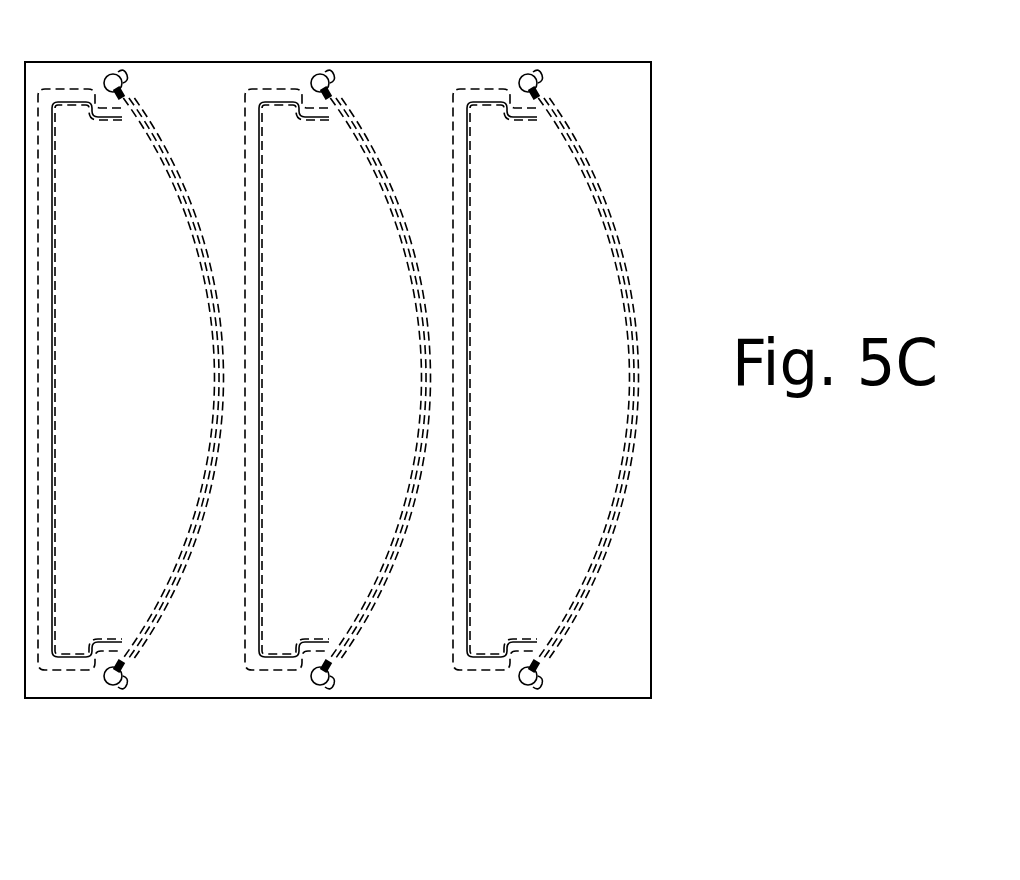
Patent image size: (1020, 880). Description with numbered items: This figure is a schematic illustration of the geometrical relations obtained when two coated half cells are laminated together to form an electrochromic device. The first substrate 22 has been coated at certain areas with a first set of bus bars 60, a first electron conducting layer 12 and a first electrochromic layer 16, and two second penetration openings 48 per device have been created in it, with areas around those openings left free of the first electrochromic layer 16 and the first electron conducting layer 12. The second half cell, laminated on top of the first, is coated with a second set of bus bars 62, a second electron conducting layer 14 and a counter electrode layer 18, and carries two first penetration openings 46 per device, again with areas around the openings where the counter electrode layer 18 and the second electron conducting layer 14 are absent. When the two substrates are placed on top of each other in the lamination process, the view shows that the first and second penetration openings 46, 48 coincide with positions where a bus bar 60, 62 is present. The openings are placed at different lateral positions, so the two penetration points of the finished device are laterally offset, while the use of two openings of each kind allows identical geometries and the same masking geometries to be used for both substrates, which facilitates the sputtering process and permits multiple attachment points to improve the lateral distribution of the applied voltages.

The first electron conducting layer 12 is at (396, 386).
The second electron conducting layer 14 is at (396, 386).
The first electrochromic layer 16 is at (396, 386).
The counter electrode layer 18 is at (396, 386).
The first substrate 22 is at (640, 698).
The first penetration openings 46 is at (106, 76).
The second penetration openings 48 is at (121, 70).
The first set of bus bars 60 is at (385, 367).
The second set of bus bars 62 is at (197, 110).